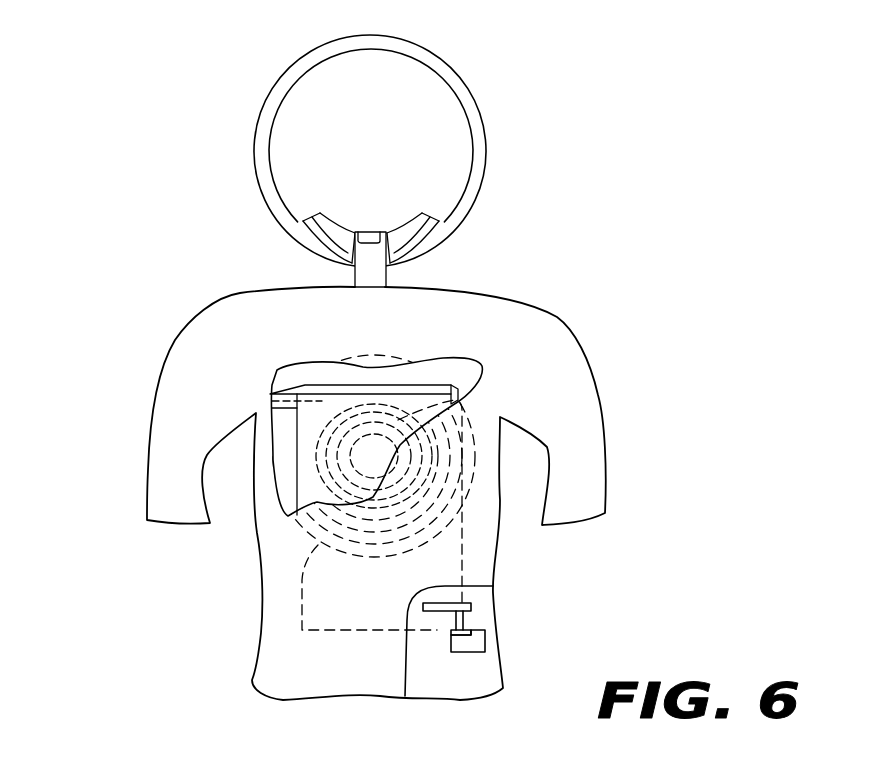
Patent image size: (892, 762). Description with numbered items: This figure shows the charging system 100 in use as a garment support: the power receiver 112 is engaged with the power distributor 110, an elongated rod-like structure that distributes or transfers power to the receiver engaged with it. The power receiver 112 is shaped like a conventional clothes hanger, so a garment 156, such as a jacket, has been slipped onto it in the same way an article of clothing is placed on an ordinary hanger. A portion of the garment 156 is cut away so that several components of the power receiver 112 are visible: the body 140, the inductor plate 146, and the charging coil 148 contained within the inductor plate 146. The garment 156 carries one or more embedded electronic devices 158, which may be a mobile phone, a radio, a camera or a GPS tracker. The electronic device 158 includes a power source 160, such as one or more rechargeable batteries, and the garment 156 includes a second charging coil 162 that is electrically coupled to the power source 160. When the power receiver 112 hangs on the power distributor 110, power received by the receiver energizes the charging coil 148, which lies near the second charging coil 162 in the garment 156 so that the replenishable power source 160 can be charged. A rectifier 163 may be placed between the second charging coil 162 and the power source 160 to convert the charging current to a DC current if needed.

The charging system 100 is at (238, 73).
The power distributor 110 is at (468, 80).
The power receiver 112 is at (313, 276).
The body 140 is at (282, 393).
The inductor plate 146 is at (315, 441).
The charging coil 148 is at (308, 470).
The garment 156 is at (563, 313).
The electronic device 158 is at (480, 653).
The power source 160 is at (450, 630).
The second charging coil 162 is at (440, 525).
The rectifier 163 is at (470, 600).